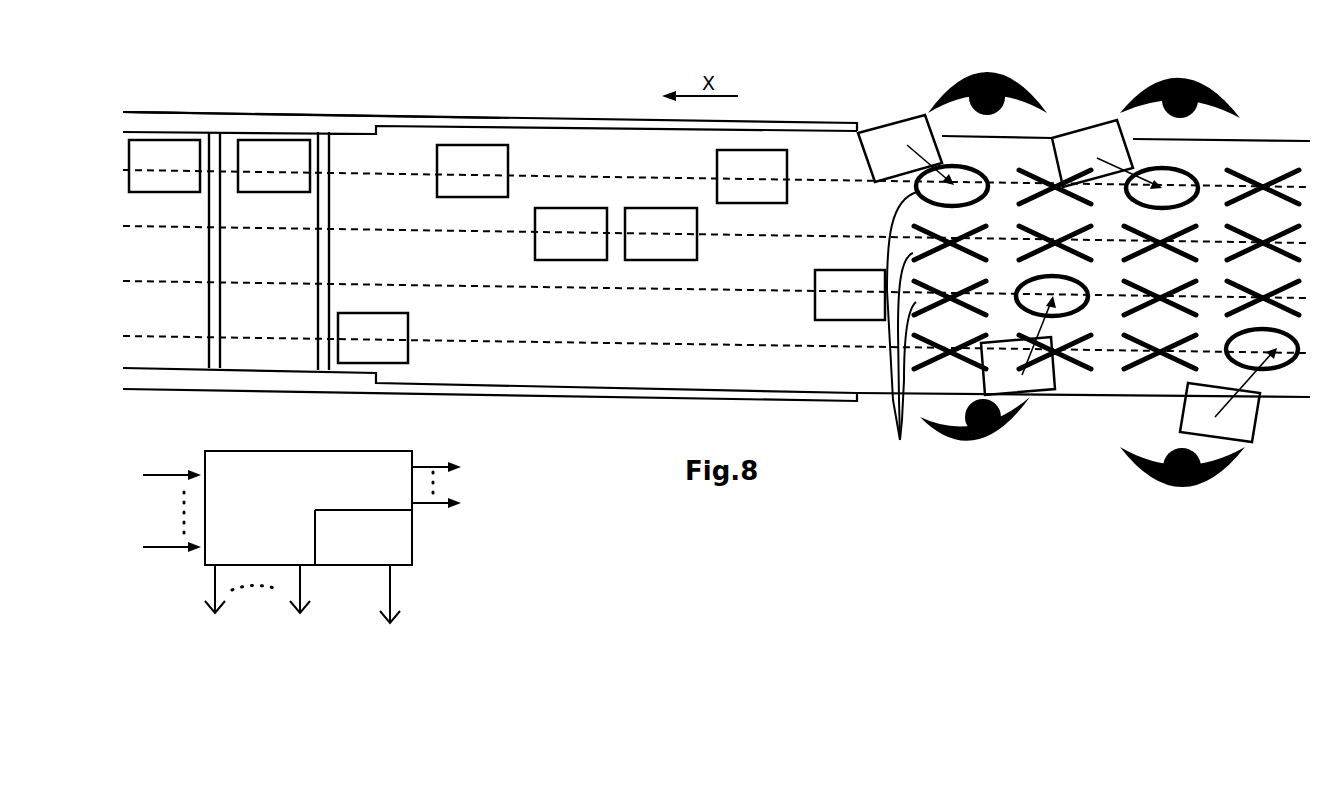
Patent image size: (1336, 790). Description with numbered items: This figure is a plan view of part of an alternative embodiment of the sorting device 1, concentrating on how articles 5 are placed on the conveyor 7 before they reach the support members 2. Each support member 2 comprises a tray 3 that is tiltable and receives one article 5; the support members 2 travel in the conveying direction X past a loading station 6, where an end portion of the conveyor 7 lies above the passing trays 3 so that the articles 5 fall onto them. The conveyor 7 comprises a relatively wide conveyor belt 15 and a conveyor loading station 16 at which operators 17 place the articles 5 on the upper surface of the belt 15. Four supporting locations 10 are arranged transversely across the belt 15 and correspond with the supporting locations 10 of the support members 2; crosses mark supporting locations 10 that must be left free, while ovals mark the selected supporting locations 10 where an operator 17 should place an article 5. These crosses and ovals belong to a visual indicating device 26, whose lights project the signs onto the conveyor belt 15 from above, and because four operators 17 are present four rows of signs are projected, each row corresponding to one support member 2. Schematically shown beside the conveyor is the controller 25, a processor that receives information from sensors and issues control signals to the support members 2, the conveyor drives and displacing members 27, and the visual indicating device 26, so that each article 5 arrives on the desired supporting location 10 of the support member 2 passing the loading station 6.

The sorting device 1 is at (204, 38).
The support members 2 is at (227, 127).
The tray 3 is at (313, 150).
The article 5 is at (277, 148).
The loading station 6 is at (389, 102).
The conveyor 7 is at (585, 140).
The supporting locations 10 is at (902, 332).
The conveyor belt 15 is at (558, 140).
The conveyor loading station 16 is at (1263, 73).
The operators 17 is at (945, 436).
The controller 25 is at (342, 568).
The visual indicating device 26 is at (363, 537).
The displacing members 27 is at (284, 650).